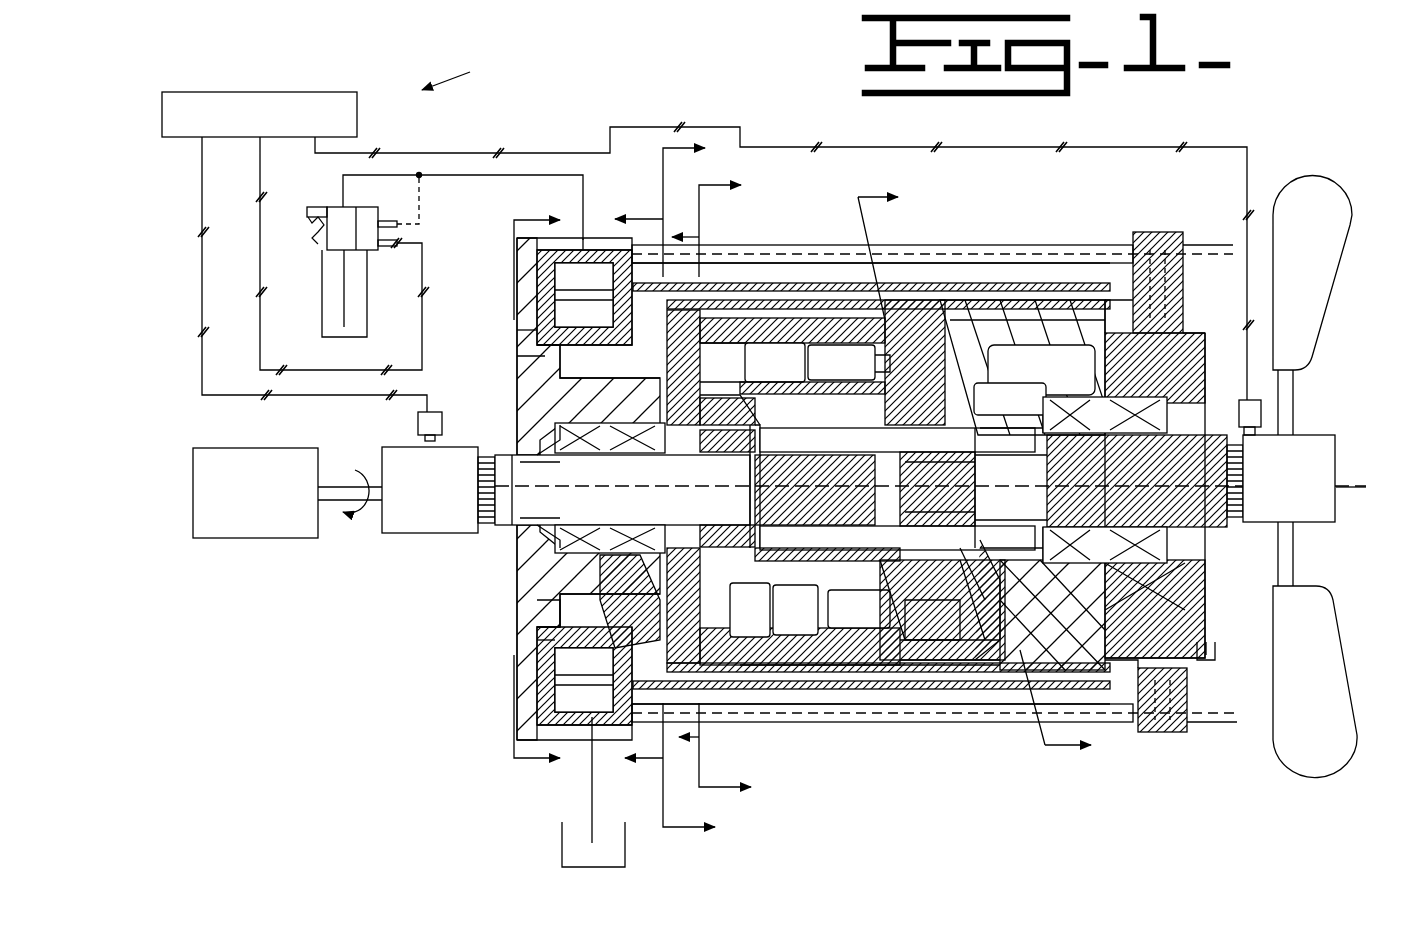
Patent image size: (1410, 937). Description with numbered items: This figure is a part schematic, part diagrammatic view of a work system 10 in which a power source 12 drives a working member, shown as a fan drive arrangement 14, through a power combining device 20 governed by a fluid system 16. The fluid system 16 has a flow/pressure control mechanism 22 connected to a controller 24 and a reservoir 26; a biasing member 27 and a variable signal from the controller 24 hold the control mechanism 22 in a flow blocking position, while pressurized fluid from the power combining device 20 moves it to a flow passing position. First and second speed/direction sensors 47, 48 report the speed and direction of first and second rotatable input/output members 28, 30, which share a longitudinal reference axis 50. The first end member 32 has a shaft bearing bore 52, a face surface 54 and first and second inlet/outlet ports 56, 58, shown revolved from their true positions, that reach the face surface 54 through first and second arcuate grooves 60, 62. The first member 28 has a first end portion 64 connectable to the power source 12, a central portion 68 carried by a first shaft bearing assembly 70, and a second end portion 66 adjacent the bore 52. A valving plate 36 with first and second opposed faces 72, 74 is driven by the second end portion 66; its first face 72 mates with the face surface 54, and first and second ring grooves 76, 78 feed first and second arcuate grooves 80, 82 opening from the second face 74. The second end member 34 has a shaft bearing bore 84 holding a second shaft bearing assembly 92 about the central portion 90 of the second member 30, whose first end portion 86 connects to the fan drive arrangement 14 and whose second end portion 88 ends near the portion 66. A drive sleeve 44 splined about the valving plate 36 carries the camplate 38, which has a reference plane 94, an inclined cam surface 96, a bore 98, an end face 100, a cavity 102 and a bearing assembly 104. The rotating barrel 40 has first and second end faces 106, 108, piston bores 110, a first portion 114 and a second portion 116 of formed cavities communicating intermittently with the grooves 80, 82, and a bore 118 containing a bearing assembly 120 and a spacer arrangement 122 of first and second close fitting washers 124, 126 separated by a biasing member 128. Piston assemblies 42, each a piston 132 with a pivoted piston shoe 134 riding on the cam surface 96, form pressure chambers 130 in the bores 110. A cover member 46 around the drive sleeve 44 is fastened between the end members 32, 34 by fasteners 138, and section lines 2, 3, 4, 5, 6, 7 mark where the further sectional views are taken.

The work system 10 is at (385, 742).
The power source 12 is at (193, 493).
The fan drive arrangement 14 is at (1323, 537).
The fluid system 16 is at (459, 75).
The power combining device 20 is at (420, 603).
The flow/pressure control mechanism 22 is at (330, 248).
The controller 24 is at (262, 92).
The reservoir 26 is at (322, 320).
The biasing member 27 is at (310, 226).
The first rotatable input/output member 28 is at (930, 490).
The second rotatable input/output member 30 is at (1200, 528).
The first end member 32 is at (517, 366).
The second end member 34 is at (1192, 335).
The valving plate 36 is at (726, 700).
The camplate 38 is at (1020, 325).
The rotating barrel 40 is at (800, 325).
The piston assemblies 42 is at (935, 670).
The drive sleeve 44 is at (880, 685).
The cover member 46 is at (1010, 262).
The first speed/direction sensor 47 is at (418, 425).
The second speed/direction sensor 48 is at (1250, 436).
The reference axis 50 is at (466, 496).
The shaft bearing bore 52 is at (580, 448).
The face surface 54 is at (540, 645).
The first inlet/outlet port 56 is at (580, 240).
The second inlet/outlet port 58 is at (582, 720).
The first arcuate groove 60 is at (517, 333).
The second arcuate groove 62 is at (540, 610).
The first end portion 64 is at (472, 470).
The second end portion 66 is at (748, 498).
The central portion 68 is at (615, 532).
The first shaft bearing assembly 70 is at (542, 460).
The first opposed face 72 is at (625, 462).
The second opposed face 74 is at (780, 450).
The first ring groove 76 is at (612, 335).
The second ring groove 78 is at (565, 428).
The first arcuate groove 80 is at (750, 610).
The second arcuate groove 82 is at (758, 556).
The shaft bearing bore 84 is at (1195, 582).
The first end portion 86 is at (1255, 490).
The second end portion 88 is at (945, 560).
The central portion 90 is at (1160, 596).
The second shaft bearing assembly 92 is at (1160, 398).
The reference plane 94 is at (972, 500).
The cam surface 96 is at (1012, 545).
The bore 98 is at (1015, 428).
The end face 100 is at (1150, 332).
The cavity 102 is at (1010, 399).
The bearing assembly 104 is at (1038, 474).
The first end face 106 is at (680, 340).
The second end face 108 is at (975, 670).
The piston bores 110 is at (862, 318).
The first portion of formed cavities 114 is at (748, 312).
The second portion of formed cavities 116 is at (742, 395).
The bore 118 is at (910, 447).
The bearing assembly 120 is at (718, 497).
The spacer arrangement 122 is at (849, 362).
The first close fitting washer 124 is at (825, 518).
The second close fitting washer 126 is at (902, 490).
The biasing member 128 is at (900, 468).
The pressure chambers 130 is at (781, 489).
The piston 132 is at (925, 682).
The piston shoe 134 is at (1095, 692).
The fasteners 138 is at (1042, 252).
The section line 2 is at (525, 488).
The section line 3 is at (652, 489).
The section line 4 is at (674, 487).
The section line 5 is at (698, 488).
The section line 6 is at (714, 488).
The section line 7 is at (963, 472).